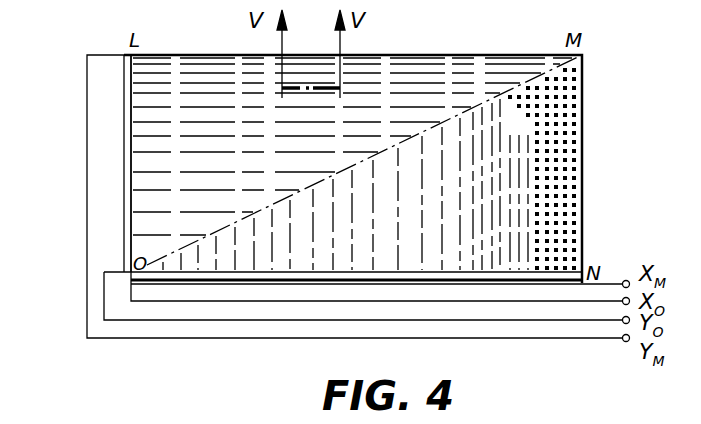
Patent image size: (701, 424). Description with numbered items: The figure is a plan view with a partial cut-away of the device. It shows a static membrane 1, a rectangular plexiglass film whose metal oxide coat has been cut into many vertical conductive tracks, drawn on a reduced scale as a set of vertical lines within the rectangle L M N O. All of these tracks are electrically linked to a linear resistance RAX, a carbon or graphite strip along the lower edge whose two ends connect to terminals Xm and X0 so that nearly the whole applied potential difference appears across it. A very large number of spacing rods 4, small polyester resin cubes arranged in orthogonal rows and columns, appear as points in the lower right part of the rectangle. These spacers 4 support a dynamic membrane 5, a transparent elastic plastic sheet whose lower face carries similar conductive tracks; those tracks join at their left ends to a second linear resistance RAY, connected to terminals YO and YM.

The static membrane 1 is at (380, 226).
The spacing rods 4 is at (567, 138).
The dynamic membrane 5 is at (285, 165).
The linear resistance RAX is at (233, 278).
The second linear resistance RAY is at (130, 176).